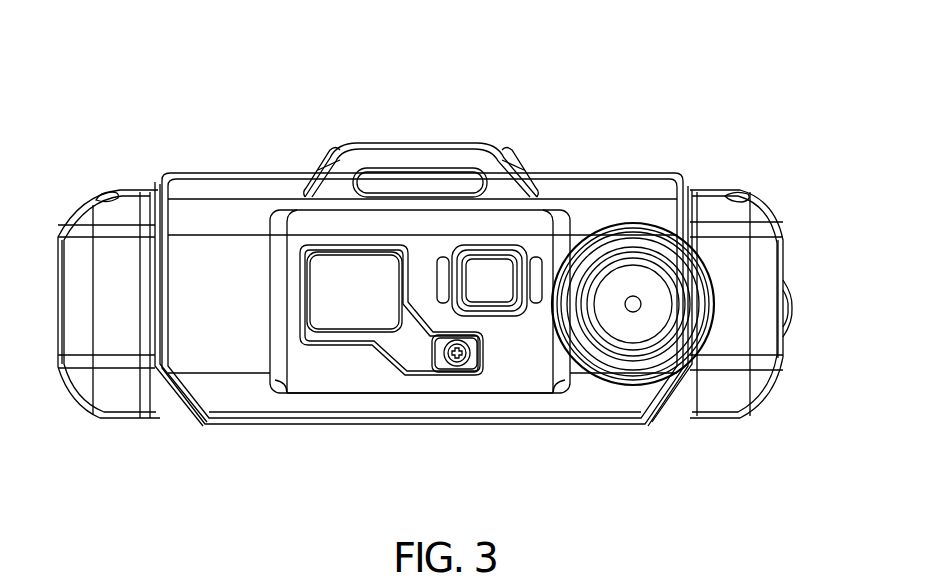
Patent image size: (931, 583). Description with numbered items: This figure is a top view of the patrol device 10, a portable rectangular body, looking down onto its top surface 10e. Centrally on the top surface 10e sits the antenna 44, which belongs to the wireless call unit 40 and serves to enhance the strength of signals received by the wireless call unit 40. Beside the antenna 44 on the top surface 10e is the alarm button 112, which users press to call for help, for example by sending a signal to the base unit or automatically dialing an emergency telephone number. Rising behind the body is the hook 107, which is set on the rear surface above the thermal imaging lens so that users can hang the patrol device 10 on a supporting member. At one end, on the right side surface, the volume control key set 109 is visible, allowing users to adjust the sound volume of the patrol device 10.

The patrol device 10 is at (447, 251).
The top surface 10e is at (213, 275).
The hook 107 is at (413, 160).
The volume control key set 109 is at (791, 302).
The alarm button 112 is at (503, 297).
The antenna 44 is at (632, 312).
The wireless call unit 40 is at (633, 355).